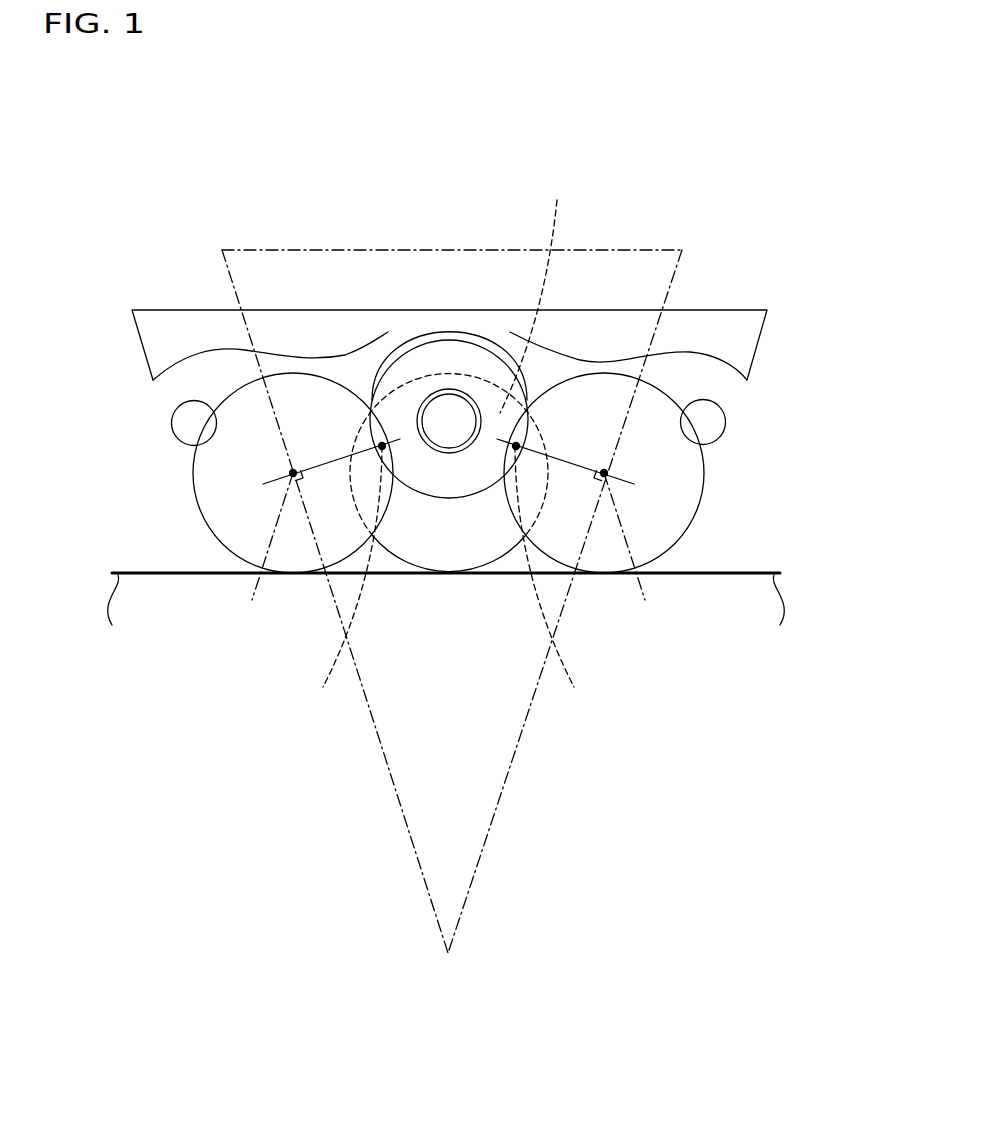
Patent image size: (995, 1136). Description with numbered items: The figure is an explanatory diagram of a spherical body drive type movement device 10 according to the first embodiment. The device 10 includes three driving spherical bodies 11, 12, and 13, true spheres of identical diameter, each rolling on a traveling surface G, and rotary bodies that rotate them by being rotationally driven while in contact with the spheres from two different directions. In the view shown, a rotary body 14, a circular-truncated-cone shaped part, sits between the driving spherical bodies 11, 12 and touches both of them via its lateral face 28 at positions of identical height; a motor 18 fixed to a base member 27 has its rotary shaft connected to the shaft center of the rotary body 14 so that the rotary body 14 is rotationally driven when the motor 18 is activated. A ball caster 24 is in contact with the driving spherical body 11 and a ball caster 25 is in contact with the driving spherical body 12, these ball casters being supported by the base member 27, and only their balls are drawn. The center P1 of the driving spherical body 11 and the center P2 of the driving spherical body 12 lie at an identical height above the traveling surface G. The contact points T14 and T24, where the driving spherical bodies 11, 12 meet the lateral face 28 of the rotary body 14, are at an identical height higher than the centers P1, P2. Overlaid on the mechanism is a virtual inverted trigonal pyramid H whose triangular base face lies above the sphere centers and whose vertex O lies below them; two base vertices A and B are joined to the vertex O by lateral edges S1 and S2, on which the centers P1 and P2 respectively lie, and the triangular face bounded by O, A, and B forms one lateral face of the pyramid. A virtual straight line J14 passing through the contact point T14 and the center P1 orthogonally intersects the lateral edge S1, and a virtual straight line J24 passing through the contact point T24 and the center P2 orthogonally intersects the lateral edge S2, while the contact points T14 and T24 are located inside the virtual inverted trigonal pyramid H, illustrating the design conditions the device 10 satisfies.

The spherical body drive type movement device 10 is at (639, 138).
The driving spherical body 11 is at (230, 518).
The driving spherical body 12 is at (670, 518).
The driving spherical body 13 is at (538, 290).
The rotary body 14 is at (473, 326).
The motor 18 is at (448, 417).
The ball caster 24 is at (180, 425).
The ball caster 25 is at (718, 423).
The base member 27 is at (727, 318).
The lateral face 28 is at (449, 333).
The virtual inverted trigonal pyramid H is at (281, 190).
The vertex A is at (222, 250).
The vertex B is at (682, 250).
The traveling surface G is at (775, 570).
The center P1 is at (293, 473).
The center P2 is at (604, 473).
The virtual straight line J14 is at (264, 555).
The virtual straight line J24 is at (634, 555).
The contact point T14 is at (341, 584).
The contact point T24 is at (556, 584).
The lateral edge S1 is at (423, 868).
The lateral edge S2 is at (477, 868).
The vertex O is at (450, 953).